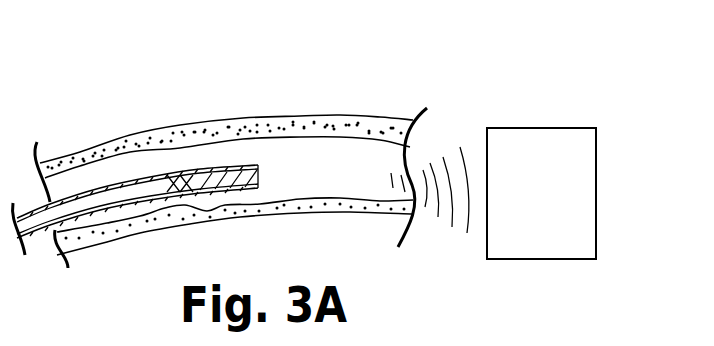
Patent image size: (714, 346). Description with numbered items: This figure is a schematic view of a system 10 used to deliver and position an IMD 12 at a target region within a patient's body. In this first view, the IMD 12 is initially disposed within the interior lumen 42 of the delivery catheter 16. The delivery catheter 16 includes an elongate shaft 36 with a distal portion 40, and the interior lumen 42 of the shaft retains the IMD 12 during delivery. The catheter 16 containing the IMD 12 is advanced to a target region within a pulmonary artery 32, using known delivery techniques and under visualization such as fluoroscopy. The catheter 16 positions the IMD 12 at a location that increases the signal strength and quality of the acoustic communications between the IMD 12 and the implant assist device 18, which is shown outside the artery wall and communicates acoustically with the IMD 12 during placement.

The system 10 is at (336, 96).
The IMD 12 is at (257, 165).
The delivery catheter 16 is at (38, 237).
The implant assist device 18 is at (596, 160).
The pulmonary artery 32 is at (213, 120).
The elongate shaft 36 is at (153, 167).
The distal portion 40 is at (92, 180).
The interior lumen 42 is at (83, 207).